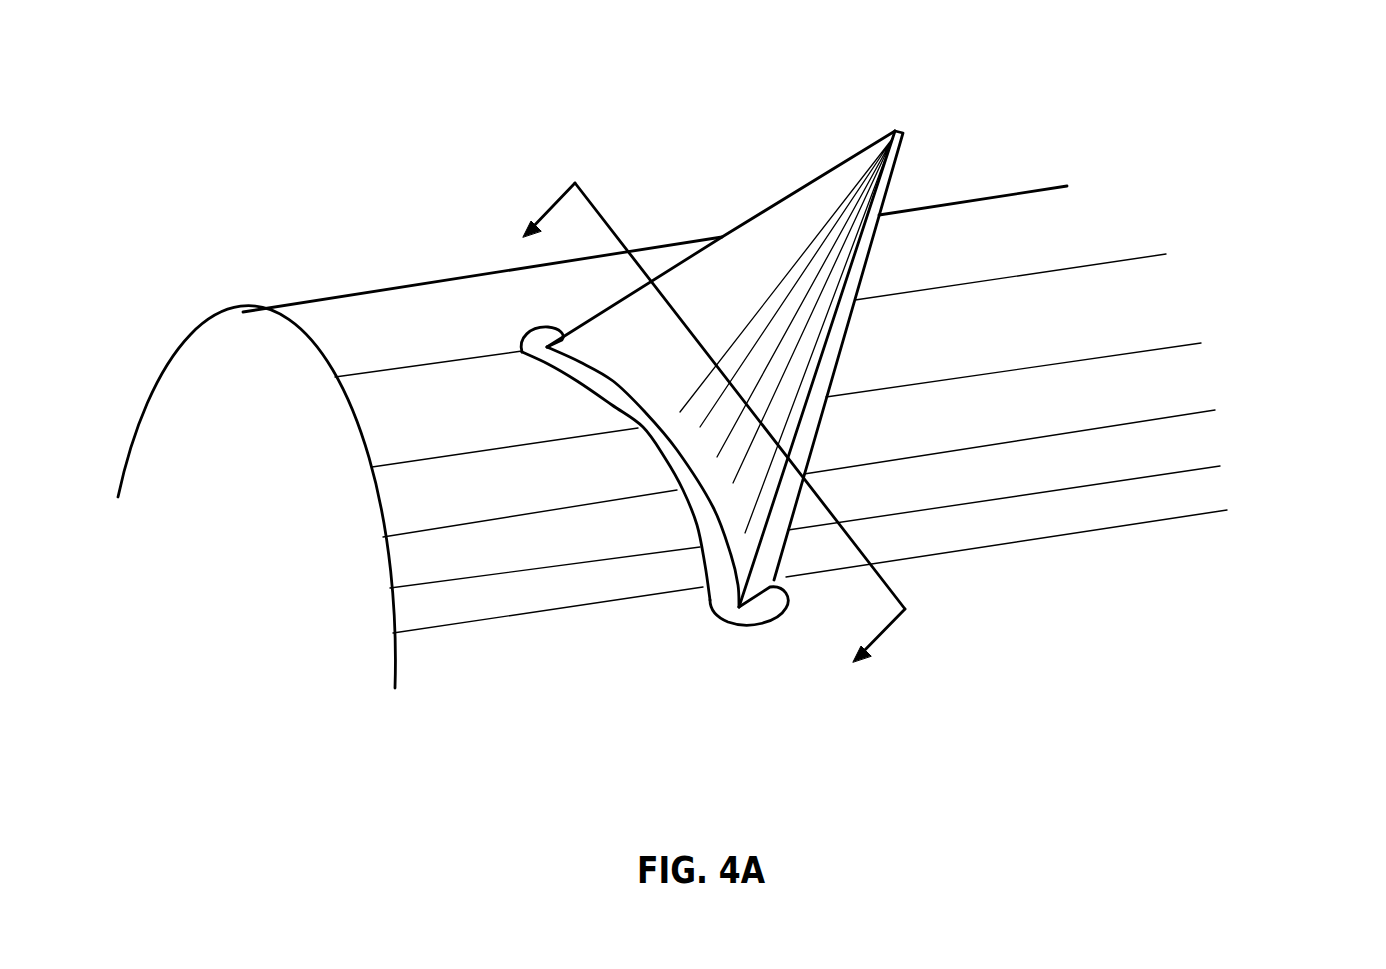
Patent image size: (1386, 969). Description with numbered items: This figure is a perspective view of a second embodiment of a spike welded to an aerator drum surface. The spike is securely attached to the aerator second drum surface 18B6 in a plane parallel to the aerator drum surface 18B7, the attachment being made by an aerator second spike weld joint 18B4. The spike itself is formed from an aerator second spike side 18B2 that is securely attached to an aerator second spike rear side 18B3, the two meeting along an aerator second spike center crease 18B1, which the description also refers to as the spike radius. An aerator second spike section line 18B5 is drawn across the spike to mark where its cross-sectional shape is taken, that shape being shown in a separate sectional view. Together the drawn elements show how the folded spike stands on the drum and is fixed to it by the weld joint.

The aerator second spike center crease 18B1 is at (695, 415).
The aerator second spike side 18B2 is at (833, 347).
The aerator second spike rear side 18B3 is at (782, 198).
The aerator second spike weld joint 18B4 is at (537, 342).
The aerator second spike section line 18B5 is at (905, 609).
The aerator second drum surface 18B6 is at (448, 557).
The aerator drum surface 18B7 is at (255, 443).